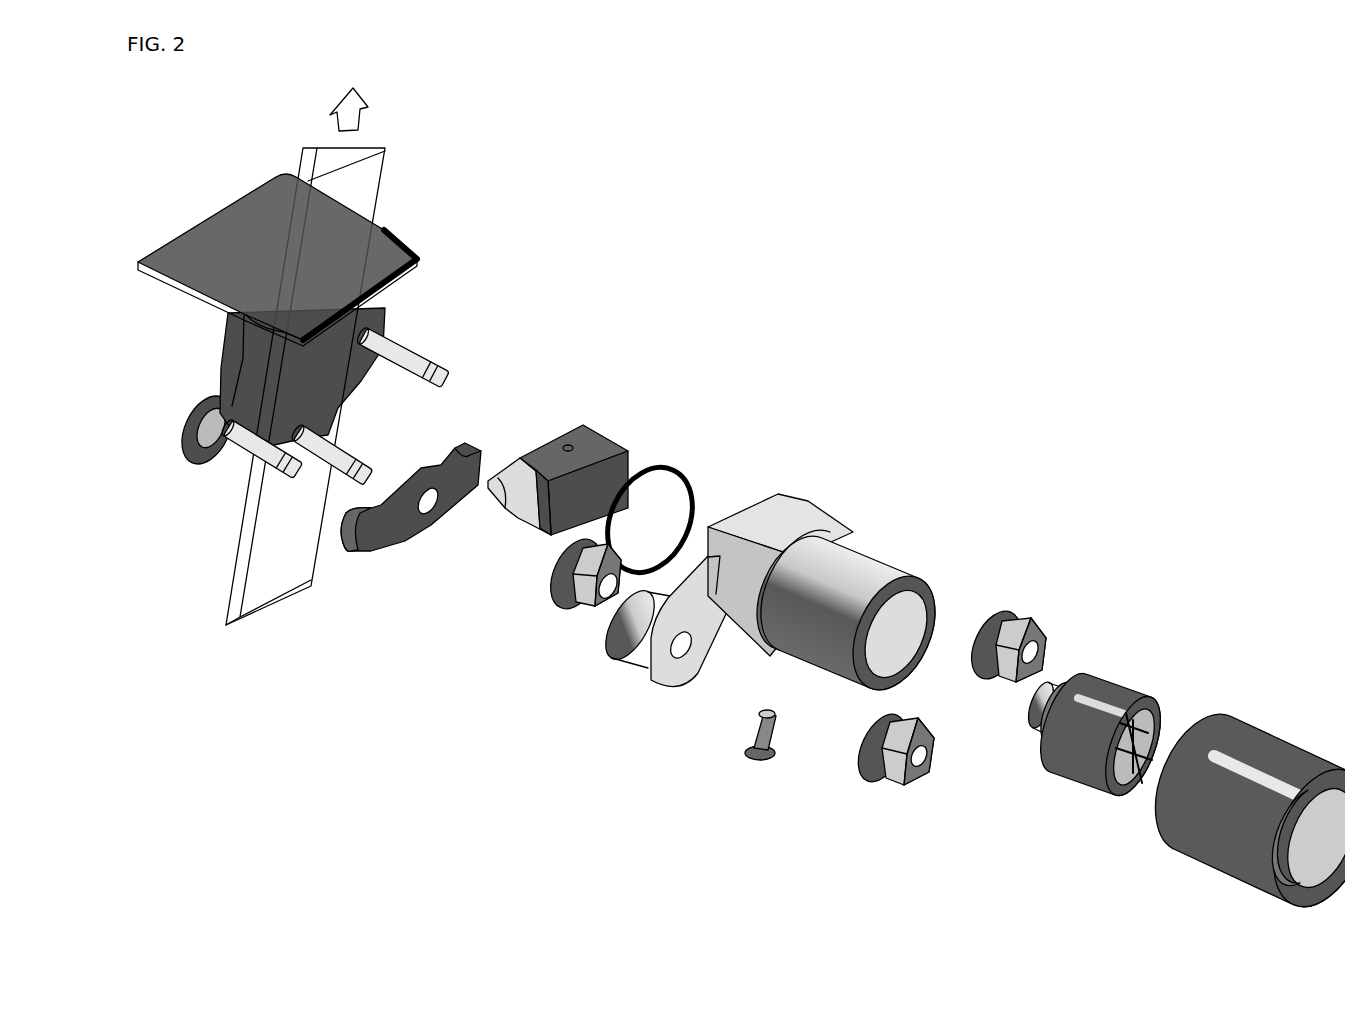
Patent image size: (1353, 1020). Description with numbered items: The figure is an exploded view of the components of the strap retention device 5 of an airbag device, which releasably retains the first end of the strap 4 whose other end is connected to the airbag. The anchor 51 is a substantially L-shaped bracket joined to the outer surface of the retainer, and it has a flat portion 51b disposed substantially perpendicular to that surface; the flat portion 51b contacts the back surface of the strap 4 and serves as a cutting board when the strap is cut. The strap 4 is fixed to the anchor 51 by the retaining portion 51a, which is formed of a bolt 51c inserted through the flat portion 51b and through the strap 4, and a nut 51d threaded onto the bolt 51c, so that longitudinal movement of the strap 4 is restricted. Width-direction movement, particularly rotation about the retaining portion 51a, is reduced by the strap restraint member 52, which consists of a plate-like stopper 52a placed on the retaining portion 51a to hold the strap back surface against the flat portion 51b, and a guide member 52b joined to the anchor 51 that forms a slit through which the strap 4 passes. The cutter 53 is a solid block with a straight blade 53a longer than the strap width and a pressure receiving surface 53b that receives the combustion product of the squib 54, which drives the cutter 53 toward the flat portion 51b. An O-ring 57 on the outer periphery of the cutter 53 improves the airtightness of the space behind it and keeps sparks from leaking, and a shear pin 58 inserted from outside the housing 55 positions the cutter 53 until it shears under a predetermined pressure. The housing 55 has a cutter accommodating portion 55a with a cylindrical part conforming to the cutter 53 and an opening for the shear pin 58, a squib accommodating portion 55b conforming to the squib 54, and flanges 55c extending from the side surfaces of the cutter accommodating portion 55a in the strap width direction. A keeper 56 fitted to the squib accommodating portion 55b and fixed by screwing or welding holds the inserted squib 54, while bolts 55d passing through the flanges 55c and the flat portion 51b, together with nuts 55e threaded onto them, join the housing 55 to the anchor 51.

The strap 4 is at (375, 161).
The strap retention device 5 is at (950, 317).
The anchor 51 is at (322, 438).
The retaining portion 51a is at (355, 695).
The flat portion 51b is at (214, 380).
The bolt 51c is at (320, 472).
The nut 51d is at (565, 585).
The strap restraint member 52 is at (446, 418).
The stopper 52a is at (438, 457).
The guide member 52b is at (405, 258).
The cutter 53 is at (566, 450).
The blade 53a is at (501, 460).
The pressure receiving surface 53b is at (598, 473).
The squib 54 is at (1106, 668).
The housing 55 is at (768, 580).
The cutter accommodating portion 55a is at (771, 505).
The squib accommodating portion 55b is at (868, 548).
The flanges 55c is at (638, 650).
The bolts 55d is at (425, 342).
The nuts 55e is at (1003, 600).
The keeper 56 is at (1260, 738).
The O-ring 57 is at (658, 453).
The shear pin 58 is at (744, 750).